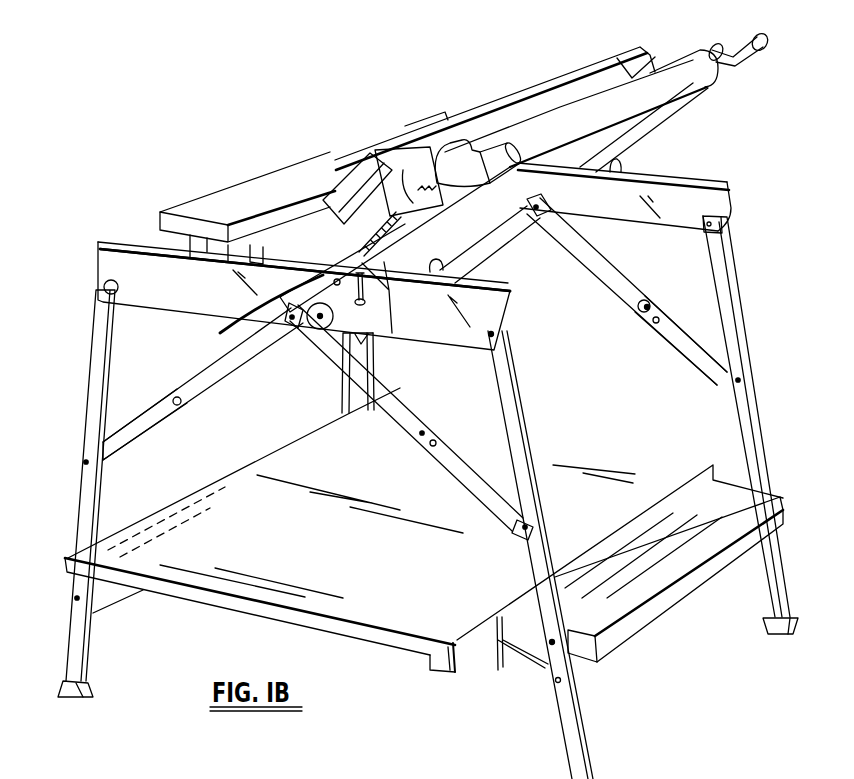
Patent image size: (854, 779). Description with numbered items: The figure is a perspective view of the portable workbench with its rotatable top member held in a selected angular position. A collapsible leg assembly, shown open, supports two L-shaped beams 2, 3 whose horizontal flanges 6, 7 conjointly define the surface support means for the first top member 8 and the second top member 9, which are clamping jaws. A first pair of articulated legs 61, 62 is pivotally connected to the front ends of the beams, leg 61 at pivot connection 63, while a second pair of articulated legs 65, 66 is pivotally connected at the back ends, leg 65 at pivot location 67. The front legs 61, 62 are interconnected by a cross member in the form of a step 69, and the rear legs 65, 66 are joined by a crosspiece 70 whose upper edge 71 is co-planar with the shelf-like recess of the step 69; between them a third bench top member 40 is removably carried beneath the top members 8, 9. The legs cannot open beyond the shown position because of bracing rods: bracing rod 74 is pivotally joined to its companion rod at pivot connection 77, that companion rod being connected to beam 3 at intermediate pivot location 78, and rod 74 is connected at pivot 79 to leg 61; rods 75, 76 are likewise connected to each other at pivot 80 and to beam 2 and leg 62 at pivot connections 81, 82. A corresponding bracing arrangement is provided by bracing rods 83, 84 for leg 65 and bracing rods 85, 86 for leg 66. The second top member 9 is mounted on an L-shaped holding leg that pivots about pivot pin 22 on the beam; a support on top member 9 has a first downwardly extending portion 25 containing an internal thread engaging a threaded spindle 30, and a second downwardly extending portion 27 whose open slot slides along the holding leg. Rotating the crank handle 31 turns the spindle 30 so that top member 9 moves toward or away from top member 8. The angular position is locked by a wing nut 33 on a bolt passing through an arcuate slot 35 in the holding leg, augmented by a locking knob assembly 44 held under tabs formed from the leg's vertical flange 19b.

The beam 2 is at (730, 207).
The beam 3 is at (465, 330).
The horizontal flange of beam 2 6 is at (700, 183).
The horizontal flange of beam 3 7 is at (478, 290).
The first top member 8 is at (280, 184).
The second top member 9 is at (484, 100).
The vertical flange of holding leg 19 19b is at (387, 300).
The pivot pin 22 is at (240, 320).
The first downwardly extending portion 25 is at (405, 195).
The second downwardly extending portion 27 is at (335, 198).
The threaded spindle 30 is at (380, 262).
The crank handle 31 is at (762, 50).
The wing nut 33 is at (343, 414).
The arcuate slot 35 is at (350, 280).
The third bench top member 40 is at (643, 462).
The locking knob assembly 44 is at (320, 330).
The articulated leg 61 is at (510, 407).
The articulated leg 62 is at (732, 310).
The pivot connection 63 is at (492, 335).
The articulated leg 65 is at (90, 397).
The articulated leg 66 is at (368, 411).
The pivot location 67 is at (98, 290).
The step 69 is at (617, 603).
The crosspiece 70 is at (178, 528).
The upper edge 71 is at (207, 505).
The bracing rod 74 is at (487, 492).
The bracing rod 75 is at (603, 267).
The bracing rod 76 is at (697, 352).
The pivot connection 77 is at (422, 436).
The intermediate pivot location 78 is at (292, 320).
The pivot connection 79 is at (523, 530).
The pivot connection 80 is at (649, 302).
The pivot connection 81 is at (545, 215).
The pivot connection 82 is at (738, 380).
The bracing rod 83 is at (132, 436).
The bracing rod 84 is at (208, 378).
The bracing rod 85 is at (488, 243).
The bracing rod 86 is at (433, 270).